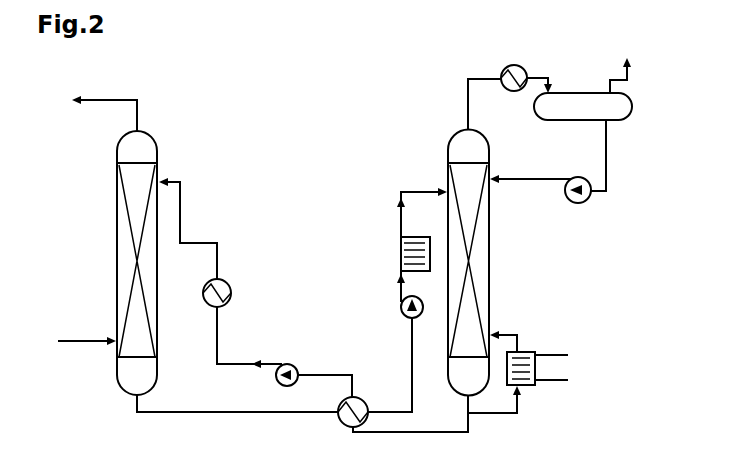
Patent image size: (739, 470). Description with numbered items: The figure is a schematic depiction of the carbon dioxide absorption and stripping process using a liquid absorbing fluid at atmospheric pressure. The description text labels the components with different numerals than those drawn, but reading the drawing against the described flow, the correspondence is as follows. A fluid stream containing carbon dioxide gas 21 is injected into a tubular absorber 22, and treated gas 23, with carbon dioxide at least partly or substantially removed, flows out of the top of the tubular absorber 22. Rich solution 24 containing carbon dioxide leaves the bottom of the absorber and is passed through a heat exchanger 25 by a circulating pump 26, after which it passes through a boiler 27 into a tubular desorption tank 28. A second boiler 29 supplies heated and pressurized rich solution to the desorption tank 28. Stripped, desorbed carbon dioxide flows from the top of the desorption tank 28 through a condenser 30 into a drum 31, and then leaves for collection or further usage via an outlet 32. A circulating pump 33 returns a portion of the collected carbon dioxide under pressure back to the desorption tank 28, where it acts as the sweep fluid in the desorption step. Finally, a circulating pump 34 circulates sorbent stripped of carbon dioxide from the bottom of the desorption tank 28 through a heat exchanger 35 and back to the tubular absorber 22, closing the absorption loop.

The feed stream 21 is at (74, 345).
The first distillation column 22 is at (113, 273).
The overhead stream of first column 23 is at (88, 112).
The bottoms stream of first column 24 is at (237, 418).
The heat exchanger 25 is at (403, 375).
The pump 26 is at (394, 297).
The heat exchanger 27 is at (406, 229).
The second distillation column 28 is at (491, 293).
The reboiler 29 is at (518, 372).
The condenser 30 is at (510, 97).
The reflux drum 31 is at (583, 93).
The overhead product stream 32 is at (626, 63).
The reflux pump 33 is at (553, 171).
The pump 34 is at (314, 369).
The heat exchanger 35 is at (220, 273).